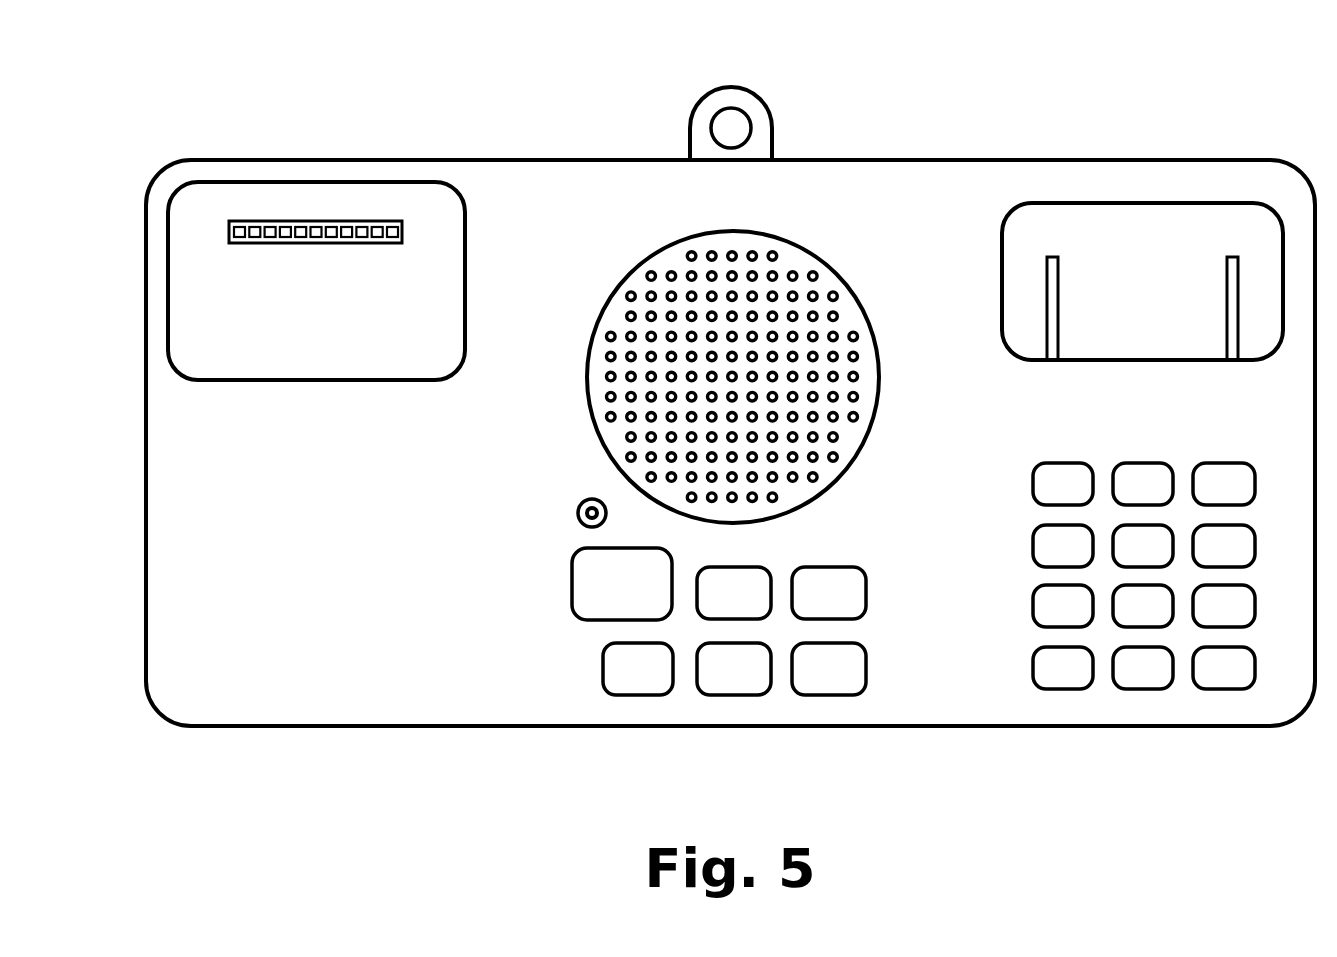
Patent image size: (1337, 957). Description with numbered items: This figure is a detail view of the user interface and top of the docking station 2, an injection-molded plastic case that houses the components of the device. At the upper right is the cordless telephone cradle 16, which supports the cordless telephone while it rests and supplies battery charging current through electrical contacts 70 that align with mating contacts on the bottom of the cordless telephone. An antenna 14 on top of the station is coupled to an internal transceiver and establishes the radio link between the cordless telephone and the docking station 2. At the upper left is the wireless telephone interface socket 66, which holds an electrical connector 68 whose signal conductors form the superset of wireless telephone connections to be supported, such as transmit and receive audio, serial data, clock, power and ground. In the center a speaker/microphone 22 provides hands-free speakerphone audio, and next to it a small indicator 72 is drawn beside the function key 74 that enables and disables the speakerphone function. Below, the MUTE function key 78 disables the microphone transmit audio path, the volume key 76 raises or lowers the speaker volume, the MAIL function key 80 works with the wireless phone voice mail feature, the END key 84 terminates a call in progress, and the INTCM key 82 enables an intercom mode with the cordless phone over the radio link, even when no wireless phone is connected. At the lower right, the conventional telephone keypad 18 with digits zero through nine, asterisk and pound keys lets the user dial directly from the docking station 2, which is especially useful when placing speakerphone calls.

The docking station 2 is at (343, 725).
The antenna 14 is at (710, 98).
The cordless telephone cradle 16 is at (1212, 203).
The telephone keypad 18 is at (1027, 697).
The speaker/microphone 22 is at (805, 243).
The wireless telephone interface socket 66 is at (188, 182).
The electrical connector 68 is at (330, 222).
The electrical contacts 70 is at (1225, 273).
The indicator light 72 is at (580, 522).
The function key 74 is at (590, 622).
The volume key 76 is at (630, 697).
The MUTE function key 78 is at (703, 622).
The MAIL function key 80 is at (735, 697).
The intercom button 82 is at (815, 697).
The END key 84 is at (863, 614).